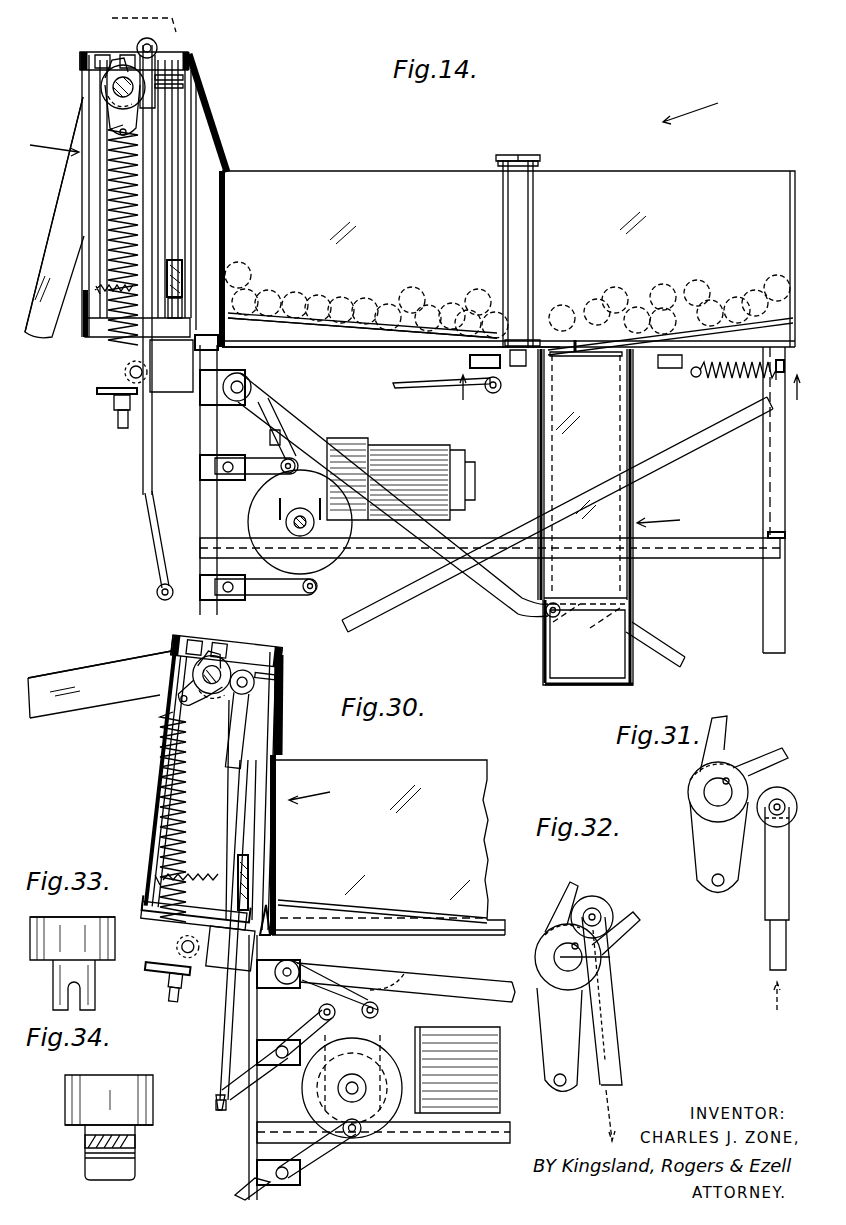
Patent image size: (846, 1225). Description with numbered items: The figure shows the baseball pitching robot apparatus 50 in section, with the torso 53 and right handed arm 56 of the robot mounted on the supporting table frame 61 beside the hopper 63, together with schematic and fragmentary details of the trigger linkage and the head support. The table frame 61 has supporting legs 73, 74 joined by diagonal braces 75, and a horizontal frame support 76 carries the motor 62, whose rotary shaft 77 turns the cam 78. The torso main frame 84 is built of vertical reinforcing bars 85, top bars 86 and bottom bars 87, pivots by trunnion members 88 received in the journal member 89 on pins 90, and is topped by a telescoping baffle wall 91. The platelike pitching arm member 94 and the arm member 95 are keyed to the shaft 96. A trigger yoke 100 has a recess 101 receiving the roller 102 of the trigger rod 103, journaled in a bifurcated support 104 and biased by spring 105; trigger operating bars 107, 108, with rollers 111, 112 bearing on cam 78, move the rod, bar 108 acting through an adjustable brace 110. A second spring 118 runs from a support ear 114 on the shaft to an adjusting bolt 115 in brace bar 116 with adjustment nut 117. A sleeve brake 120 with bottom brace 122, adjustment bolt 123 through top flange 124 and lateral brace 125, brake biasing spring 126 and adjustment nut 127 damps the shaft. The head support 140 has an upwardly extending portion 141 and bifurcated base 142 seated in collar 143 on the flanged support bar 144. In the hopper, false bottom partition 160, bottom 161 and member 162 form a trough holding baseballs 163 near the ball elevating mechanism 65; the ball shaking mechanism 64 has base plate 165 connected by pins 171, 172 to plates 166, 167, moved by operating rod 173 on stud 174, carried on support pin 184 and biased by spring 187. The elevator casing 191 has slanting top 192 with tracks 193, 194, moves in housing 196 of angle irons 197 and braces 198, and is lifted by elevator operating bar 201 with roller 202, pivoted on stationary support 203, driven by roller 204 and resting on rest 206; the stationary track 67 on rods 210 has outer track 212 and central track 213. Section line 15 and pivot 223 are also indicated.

In FIG. 14, the section line 15 is at (635, 398).
In FIG. 14, the baseball pitching robot apparatus 50 is at (702, 103).
In FIG. 14, the movable torso 53 is at (78, 348).
In FIG. 30, the movable torso 53 is at (151, 806).
In FIG. 14, the right handed arm 56 is at (40, 264).
In FIG. 30, the right handed arm 56 is at (66, 730).
In FIG. 14, the supporting table frame 61 is at (765, 600).
In FIG. 30, the supporting table frame 61 is at (239, 1182).
In FIG. 14, the motor 62 is at (408, 452).
In FIG. 30, the motor 62 is at (470, 1032).
In FIG. 14, the hopper 63 is at (363, 182).
In FIG. 30, the hopper 63 is at (448, 765).
In FIG. 14, the ball shaking mechanism 64 is at (471, 366).
In FIG. 14, the ball elevating mechanism 65 is at (671, 517).
In FIG. 14, the stationary ball conveying track 67 is at (518, 145).
In FIG. 14, the supporting leg 73 is at (200, 522).
In FIG. 30, the supporting leg 73 is at (249, 1158).
In FIG. 14, the supporting leg 74 is at (775, 508).
In FIG. 14, the diagonal brace 75 is at (690, 425).
In FIG. 14, the horizontal frame support 76 is at (205, 548).
In FIG. 30, the horizontal frame support 76 is at (465, 1143).
In FIG. 14, the rotary shaft 77 is at (312, 514).
In FIG. 30, the rotary shaft 77 is at (360, 1085).
In FIG. 14, the cam 78 is at (318, 566).
In FIG. 30, the cam 78 is at (385, 1038).
In FIG. 14, the main frame 84 is at (49, 141).
In FIG. 30, the main frame 84 is at (313, 789).
In FIG. 14, the vertically extending reinforcing bar 85 is at (90, 160).
In FIG. 30, the vertically extending reinforcing bar 85 is at (157, 827).
In FIG. 14, the laterally extending reinforcing bar 86 is at (82, 56).
In FIG. 30, the laterally extending reinforcing bar 86 is at (172, 640).
In FIG. 14, the reinforcing bar 87 is at (82, 337).
In FIG. 30, the reinforcing bar 87 is at (160, 918).
In FIG. 14, the trunnion member 88 is at (158, 340).
In FIG. 30, the trunnion member 88 is at (210, 912).
In FIG. 14, the journal member 89 is at (172, 388).
In FIG. 30, the journal member 89 is at (262, 955).
In FIG. 14, the pin 90 is at (124, 373).
In FIG. 30, the pin 90 is at (184, 957).
In FIG. 14, the telescoping baffle wall 91 is at (210, 120).
In FIG. 30, the telescoping baffle wall 91 is at (288, 735).
In FIG. 14, the elongated platelike member 94 is at (178, 30).
In FIG. 14, the arm member 95 is at (53, 235).
In FIG. 30, the arm member 95 is at (90, 670).
In FIG. 14, the shaft 96 is at (115, 98).
In FIG. 30, the shaft 96 is at (205, 675).
In FIG. 31, the shaft 96 is at (715, 792).
In FIG. 32, the shaft 96 is at (612, 957).
In FIG. 14, the trigger yoke 100 is at (101, 90).
In FIG. 30, the trigger yoke 100 is at (214, 700).
In FIG. 31, the trigger yoke 100 is at (692, 772).
In FIG. 32, the trigger yoke 100 is at (543, 930).
In FIG. 14, the recess 101 is at (108, 80).
In FIG. 30, the recess 101 is at (232, 665).
In FIG. 31, the recess 101 is at (728, 740).
In FIG. 32, the recess 101 is at (580, 892).
In FIG. 14, the roller 102 is at (158, 50).
In FIG. 30, the roller 102 is at (256, 692).
In FIG. 31, the roller 102 is at (787, 797).
In FIG. 32, the roller 102 is at (612, 905).
In FIG. 14, the trigger rod 103 is at (143, 448).
In FIG. 30, the trigger rod 103 is at (222, 1072).
In FIG. 31, the trigger rod 103 is at (770, 950).
In FIG. 32, the trigger rod 103 is at (618, 1082).
In FIG. 14, the bifurcated support 104 is at (160, 105).
In FIG. 30, the bifurcated support 104 is at (253, 750).
In FIG. 31, the bifurcated support 104 is at (765, 900).
In FIG. 32, the bifurcated support 104 is at (620, 990).
In FIG. 14, the biasing spring 105 is at (110, 282).
In FIG. 30, the biasing spring 105 is at (205, 870).
In FIG. 14, the trigger operating bar 107 is at (245, 474).
In FIG. 30, the trigger operating bar 107 is at (238, 1090).
In FIG. 14, the trigger operating bar 108 is at (262, 592).
In FIG. 30, the trigger operating bar 108 is at (305, 1165).
In FIG. 14, the adjustable brace 110 is at (152, 556).
In FIG. 30, the adjustable brace 110 is at (220, 1112).
In FIG. 14, the roller 111 is at (320, 440).
In FIG. 30, the roller 111 is at (318, 1010).
In FIG. 14, the roller 112 is at (312, 592).
In FIG. 30, the roller 112 is at (360, 1138).
In FIG. 14, the support ear 114 is at (108, 125).
In FIG. 30, the support ear 114 is at (165, 696).
In FIG. 31, the support ear 114 is at (706, 845).
In FIG. 32, the support ear 114 is at (559, 1045).
In FIG. 14, the adjusting bolt 115 is at (119, 426).
In FIG. 30, the adjusting bolt 115 is at (172, 1002).
In FIG. 14, the brace bar 116 is at (98, 392).
In FIG. 30, the brace bar 116 is at (185, 980).
In FIG. 14, the adjustment nut 117 is at (115, 404).
In FIG. 30, the adjustment nut 117 is at (165, 985).
In FIG. 14, the second spring 118 is at (110, 172).
In FIG. 30, the second spring 118 is at (160, 765).
In FIG. 14, the sleeve brake 120 is at (105, 98).
In FIG. 30, the sleeve brake 120 is at (208, 700).
In FIG. 14, the bottom brace 122 is at (186, 90).
In FIG. 14, the adjustment bolt 123 is at (226, 165).
In FIG. 30, the adjustment bolt 123 is at (282, 782).
In FIG. 14, the top flange 124 is at (186, 78).
In FIG. 30, the top flange 124 is at (284, 678).
In FIG. 14, the lateral brace 125 is at (183, 256).
In FIG. 30, the lateral brace 125 is at (250, 852).
In FIG. 14, the brake biasing spring 126 is at (228, 275).
In FIG. 14, the adjustment nut 127 is at (183, 305).
In FIG. 33, the pivotal head support 140 is at (75, 915).
In FIG. 34, the pivotal head support 140 is at (70, 1128).
In FIG. 33, the upwardly extending portion 141 is at (50, 945).
In FIG. 34, the upwardly extending portion 141 is at (80, 1105).
In FIG. 33, the bifurcated base section 142 is at (95, 993).
In FIG. 34, the bifurcated base section 142 is at (95, 1168).
In FIG. 14, the collar 143 is at (128, 55).
In FIG. 30, the collar 143 is at (228, 640).
In FIG. 14, the flanged support bar 144 is at (100, 55).
In FIG. 30, the flanged support bar 144 is at (188, 638).
In FIG. 14, the forward partition 160 is at (342, 327).
In FIG. 30, the forward partition 160 is at (392, 900).
In FIG. 14, the bottom 161 is at (283, 333).
In FIG. 30, the bottom 161 is at (413, 918).
In FIG. 14, the false bottom member 162 is at (740, 300).
In FIG. 14, the baseballs 163 is at (272, 290).
In FIG. 14, the base plate 165 is at (515, 366).
In FIG. 14, the plate 166 is at (500, 312).
In FIG. 14, the plate 167 is at (690, 300).
In FIG. 14, the pin 171 is at (530, 325).
In FIG. 14, the pin 172 is at (705, 340).
In FIG. 14, the operating rod 173 is at (430, 385).
In FIG. 14, the stud 174 is at (493, 395).
In FIG. 14, the support pin 184 is at (662, 368).
In FIG. 14, the biasing spring 187 is at (770, 378).
In FIG. 14, the box-like casing 191 is at (562, 448).
In FIG. 14, the slanting top 192 is at (604, 352).
In FIG. 14, the ball confining track 193 is at (578, 330).
In FIG. 14, the ball confining track 194 is at (590, 388).
In FIG. 14, the housing 196 is at (531, 664).
In FIG. 14, the angle iron 197 is at (548, 672).
In FIG. 14, the brace 198 is at (596, 688).
In FIG. 14, the elevator operating bar 201 is at (475, 578).
In FIG. 30, the elevator operating bar 201 is at (480, 978).
In FIG. 14, the roller 202 is at (570, 625).
In FIG. 14, the stationary support 203 is at (232, 370).
In FIG. 30, the stationary support 203 is at (298, 962).
In FIG. 30, the roller 204 is at (398, 990).
In FIG. 14, the rest 206 is at (590, 628).
In FIG. 14, the vertically extending rod 210 is at (522, 214).
In FIG. 14, the outer parallel track 212 is at (505, 153).
In FIG. 14, the central track 213 is at (540, 160).
In FIG. 14, the pivot 223 is at (545, 612).